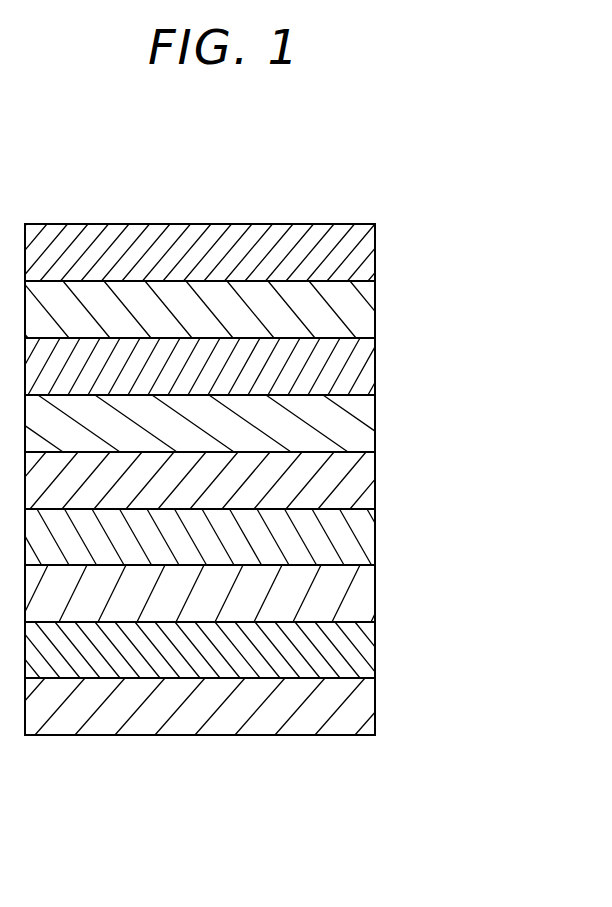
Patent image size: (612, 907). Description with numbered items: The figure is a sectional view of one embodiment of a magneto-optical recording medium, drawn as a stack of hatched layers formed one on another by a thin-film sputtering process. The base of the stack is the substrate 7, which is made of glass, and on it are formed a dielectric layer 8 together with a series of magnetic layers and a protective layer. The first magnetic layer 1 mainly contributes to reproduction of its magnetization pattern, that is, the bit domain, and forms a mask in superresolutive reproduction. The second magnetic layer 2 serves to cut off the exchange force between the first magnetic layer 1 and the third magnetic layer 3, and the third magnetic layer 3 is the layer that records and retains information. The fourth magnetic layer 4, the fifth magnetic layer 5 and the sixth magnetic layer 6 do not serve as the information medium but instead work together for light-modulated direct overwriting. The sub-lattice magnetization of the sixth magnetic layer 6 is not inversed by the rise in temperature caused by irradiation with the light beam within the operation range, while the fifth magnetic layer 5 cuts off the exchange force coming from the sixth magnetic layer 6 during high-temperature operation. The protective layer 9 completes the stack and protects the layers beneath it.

The substrate 7 is at (364, 243).
The dielectric layer 8 is at (364, 319).
The first magnetic layer 1 is at (364, 372).
The second magnetic layer 2 is at (364, 430).
The third magnetic layer 3 is at (364, 483).
The fourth magnetic layer 4 is at (364, 538).
The fifth magnetic layer 5 is at (364, 602).
The sixth magnetic layer 6 is at (364, 650).
The protective layer 9 is at (364, 707).